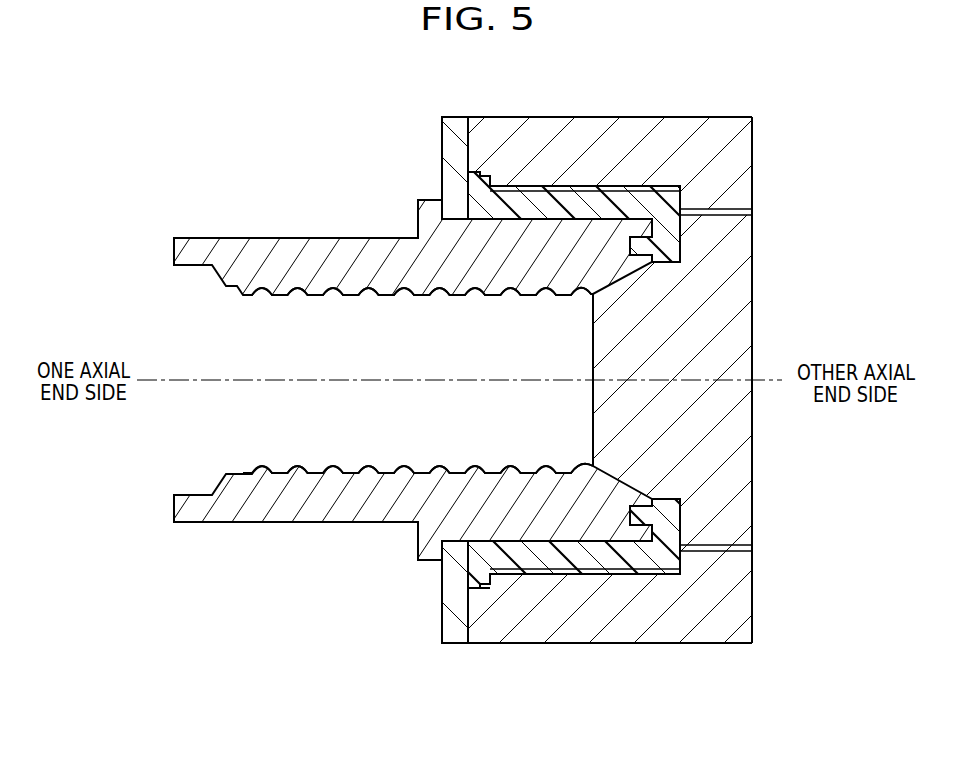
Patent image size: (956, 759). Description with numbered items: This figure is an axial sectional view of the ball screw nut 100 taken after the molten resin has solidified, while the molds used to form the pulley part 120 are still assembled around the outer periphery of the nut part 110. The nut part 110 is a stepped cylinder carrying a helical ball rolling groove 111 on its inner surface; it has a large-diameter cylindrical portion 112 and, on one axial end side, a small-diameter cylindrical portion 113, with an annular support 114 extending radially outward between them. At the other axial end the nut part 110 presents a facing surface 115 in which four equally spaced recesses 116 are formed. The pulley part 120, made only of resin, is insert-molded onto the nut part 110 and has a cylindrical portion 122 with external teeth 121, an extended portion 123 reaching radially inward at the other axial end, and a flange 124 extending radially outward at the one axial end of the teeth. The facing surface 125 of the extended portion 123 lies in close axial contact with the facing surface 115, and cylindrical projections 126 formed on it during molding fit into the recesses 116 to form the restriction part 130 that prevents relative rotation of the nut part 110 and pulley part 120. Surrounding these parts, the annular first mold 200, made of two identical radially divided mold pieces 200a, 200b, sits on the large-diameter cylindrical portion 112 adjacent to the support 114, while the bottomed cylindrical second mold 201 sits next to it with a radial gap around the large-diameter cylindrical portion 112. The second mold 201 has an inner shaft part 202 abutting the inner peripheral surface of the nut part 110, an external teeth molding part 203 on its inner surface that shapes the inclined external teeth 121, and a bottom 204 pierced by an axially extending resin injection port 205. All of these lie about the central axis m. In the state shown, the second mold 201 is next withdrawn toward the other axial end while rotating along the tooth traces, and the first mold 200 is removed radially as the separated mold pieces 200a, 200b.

The ball screw nut 100 is at (478, 380).
The nut part 110 is at (455, 311).
The ball rolling groove 111 is at (373, 297).
The large-diameter cylindrical portion 112 is at (537, 238).
The small-diameter cylindrical portion 113 is at (298, 246).
The support 114 is at (427, 199).
The facing surface 115 is at (683, 222).
The recess 116 is at (633, 250).
The pulley part 120 is at (690, 189).
The external teeth 121 is at (585, 186).
The cylindrical portion 122 is at (627, 198).
The extended portion 123 is at (670, 526).
The flange 124 is at (477, 170).
The facing surface 125 is at (627, 565).
The projection 126 is at (585, 572).
The restriction part 130 is at (672, 507).
The first mold 200 is at (478, 381).
The mold piece 200a is at (443, 127).
The mold piece 200b is at (443, 610).
The second mold 201 is at (722, 123).
The inner shaft part 202 is at (595, 422).
The external teeth molding part 203 is at (517, 570).
The bottom 204 is at (672, 583).
The resin injection port 205 is at (744, 546).
The axis m is at (772, 379).